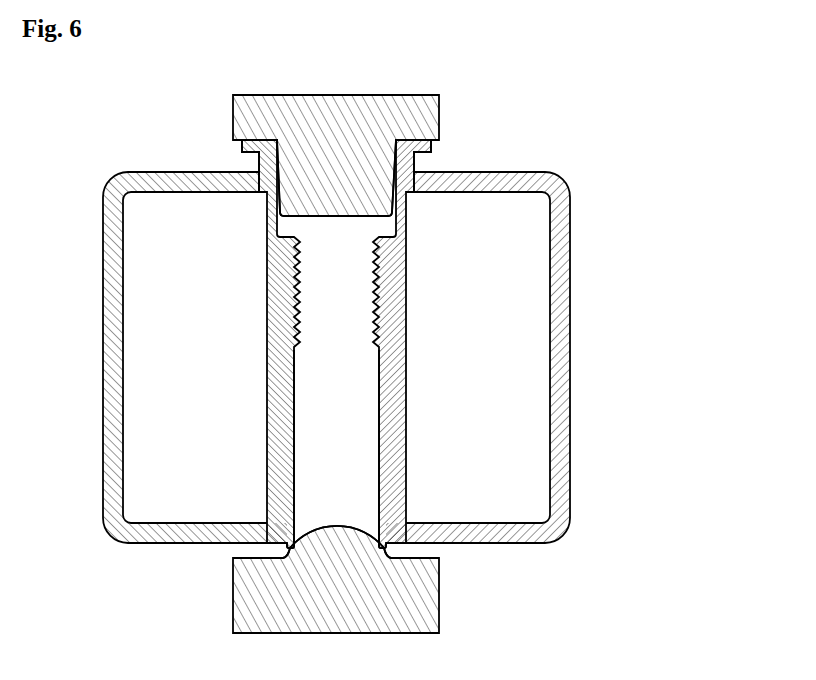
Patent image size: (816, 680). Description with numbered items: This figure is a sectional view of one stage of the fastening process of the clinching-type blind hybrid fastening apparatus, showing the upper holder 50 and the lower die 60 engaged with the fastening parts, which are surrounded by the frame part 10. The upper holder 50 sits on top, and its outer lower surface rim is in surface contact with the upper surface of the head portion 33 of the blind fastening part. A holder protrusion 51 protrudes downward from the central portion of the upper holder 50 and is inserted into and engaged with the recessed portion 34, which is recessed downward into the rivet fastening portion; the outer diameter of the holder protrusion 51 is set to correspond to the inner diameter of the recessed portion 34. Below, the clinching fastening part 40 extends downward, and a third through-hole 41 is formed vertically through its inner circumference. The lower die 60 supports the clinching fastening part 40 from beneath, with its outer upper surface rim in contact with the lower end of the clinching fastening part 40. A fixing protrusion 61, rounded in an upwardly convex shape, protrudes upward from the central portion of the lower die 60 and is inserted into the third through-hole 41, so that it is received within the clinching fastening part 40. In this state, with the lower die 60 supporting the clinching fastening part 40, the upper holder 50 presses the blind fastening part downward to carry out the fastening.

The frame part 10 is at (580, 377).
The head portion 33 is at (433, 146).
The recessed portion 34 is at (384, 224).
The clinching fastening part 40 is at (398, 540).
The third through-hole 41 is at (375, 543).
The upper holder 50 is at (450, 108).
The holder protrusion 51 is at (336, 219).
The lower die 60 is at (452, 597).
The fixing protrusion 61 is at (343, 533).